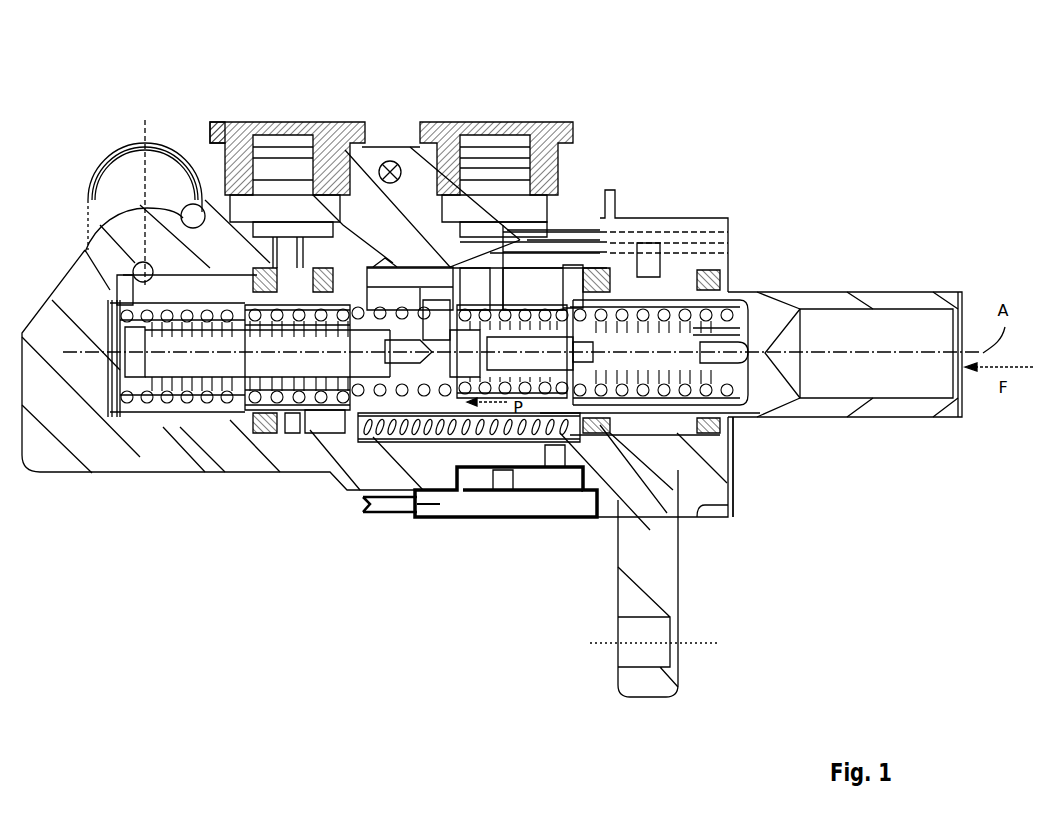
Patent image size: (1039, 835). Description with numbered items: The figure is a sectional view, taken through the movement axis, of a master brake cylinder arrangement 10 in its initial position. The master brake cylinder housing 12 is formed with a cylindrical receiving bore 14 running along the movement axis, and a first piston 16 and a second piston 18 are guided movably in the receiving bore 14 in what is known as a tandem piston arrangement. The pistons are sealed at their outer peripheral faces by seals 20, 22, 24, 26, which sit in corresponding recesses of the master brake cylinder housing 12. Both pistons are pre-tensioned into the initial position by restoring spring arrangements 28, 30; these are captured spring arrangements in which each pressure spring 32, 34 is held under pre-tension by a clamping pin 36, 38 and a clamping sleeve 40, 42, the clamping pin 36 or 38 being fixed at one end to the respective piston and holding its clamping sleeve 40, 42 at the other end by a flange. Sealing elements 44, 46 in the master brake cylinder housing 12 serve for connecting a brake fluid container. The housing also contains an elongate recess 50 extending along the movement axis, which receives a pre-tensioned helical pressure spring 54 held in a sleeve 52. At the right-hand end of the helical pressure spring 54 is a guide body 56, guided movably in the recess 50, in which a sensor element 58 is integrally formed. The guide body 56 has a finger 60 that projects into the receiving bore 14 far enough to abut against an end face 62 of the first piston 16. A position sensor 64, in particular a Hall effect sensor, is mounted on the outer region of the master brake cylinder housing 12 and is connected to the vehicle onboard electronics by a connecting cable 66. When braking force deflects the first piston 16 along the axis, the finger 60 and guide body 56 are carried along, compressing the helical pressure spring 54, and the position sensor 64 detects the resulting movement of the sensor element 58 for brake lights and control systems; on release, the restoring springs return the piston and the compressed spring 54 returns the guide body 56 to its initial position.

The master brake cylinder arrangement 10 is at (820, 251).
The master brake cylinder housing 12 is at (33, 460).
The receiving bore 14 is at (190, 427).
The first piston 16 is at (680, 218).
The second piston 18 is at (313, 433).
The seal 20 is at (707, 218).
The seal 22 is at (620, 272).
The seal 24 is at (318, 290).
The seal 26 is at (273, 290).
The restoring spring arrangement 28 is at (655, 405).
The restoring spring arrangement 30 is at (147, 403).
The pressure spring 32 is at (700, 517).
The pressure spring 34 is at (122, 437).
The clamping pin 36 is at (713, 517).
The clamping pin 38 is at (255, 437).
The clamping sleeve 40 is at (495, 310).
The clamping sleeve 42 is at (156, 290).
The sealing element 44 is at (422, 118).
The sealing element 46 is at (212, 145).
The elongate recess 50 is at (470, 442).
The sleeve 52 is at (370, 433).
The helical pressure spring 54 is at (452, 442).
The guide body 56 is at (556, 470).
The sensor element 58 is at (567, 520).
The finger 60 is at (503, 465).
The end face 62 is at (595, 240).
The position sensor 64 is at (420, 517).
The connecting cable 66 is at (385, 512).